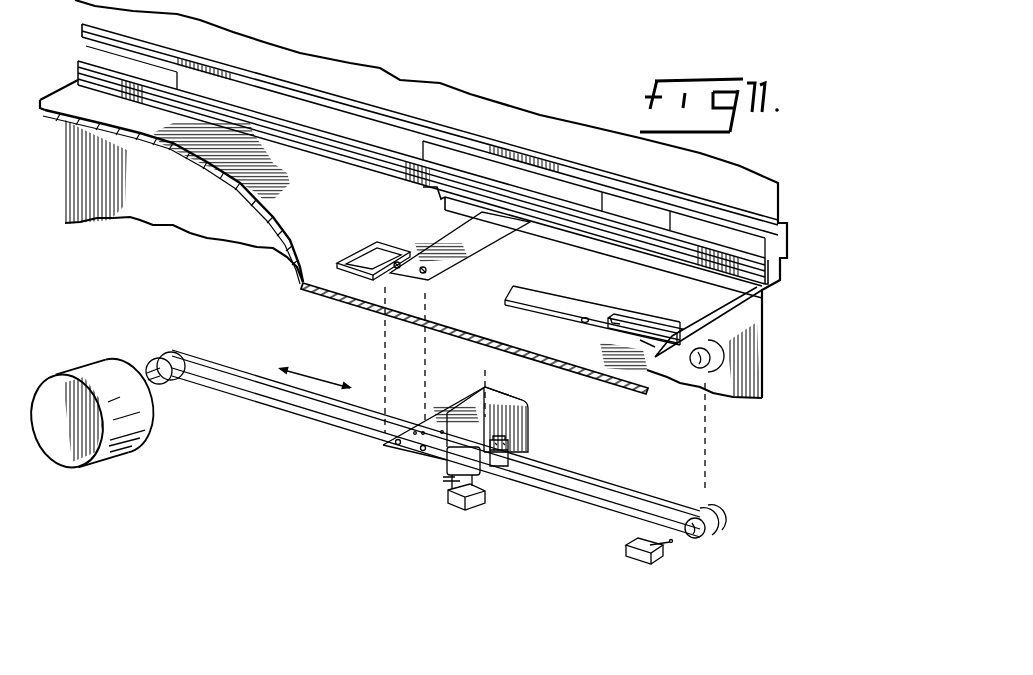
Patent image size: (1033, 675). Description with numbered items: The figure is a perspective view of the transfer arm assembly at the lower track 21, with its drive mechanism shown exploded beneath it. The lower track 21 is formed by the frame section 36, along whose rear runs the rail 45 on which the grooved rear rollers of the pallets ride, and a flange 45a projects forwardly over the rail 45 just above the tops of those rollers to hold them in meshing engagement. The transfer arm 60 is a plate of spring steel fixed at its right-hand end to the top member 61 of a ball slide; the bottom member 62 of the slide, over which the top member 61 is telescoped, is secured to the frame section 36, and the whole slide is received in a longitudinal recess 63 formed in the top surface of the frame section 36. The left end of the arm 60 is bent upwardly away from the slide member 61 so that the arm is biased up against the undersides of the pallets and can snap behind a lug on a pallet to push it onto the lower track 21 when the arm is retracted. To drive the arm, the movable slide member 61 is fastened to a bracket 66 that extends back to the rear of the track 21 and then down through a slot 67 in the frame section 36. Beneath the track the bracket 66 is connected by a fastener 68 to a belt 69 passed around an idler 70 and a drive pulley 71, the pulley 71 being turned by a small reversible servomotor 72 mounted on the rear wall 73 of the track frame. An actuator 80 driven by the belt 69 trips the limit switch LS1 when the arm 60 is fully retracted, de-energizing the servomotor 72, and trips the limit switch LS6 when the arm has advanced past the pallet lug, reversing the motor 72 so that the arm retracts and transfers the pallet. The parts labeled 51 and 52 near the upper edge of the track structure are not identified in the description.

The flange 45a is at (82, 30).
The rail 45 is at (83, 72).
The frame section 36 is at (62, 97).
The rear wall 73 is at (161, 210).
The back board element 52 is at (379, 8).
The back board element 51 is at (430, 0).
The lower track 21 is at (332, 303).
The slot 67 is at (548, 226).
The transfer arm 60 is at (526, 294).
The top member of ball slide 61 is at (647, 333).
The bottom member of ball slide 62 is at (650, 347).
The longitudinal recess 63 is at (662, 352).
The bracket 66 is at (457, 237).
The fastener 68 is at (508, 447).
The actuator 80 is at (486, 501).
The limit switch LS1 is at (466, 508).
The drive pulley 71 is at (155, 358).
The servomotor 72 is at (120, 437).
The belt 69 is at (312, 421).
The idler 70 is at (695, 543).
The limit switch LS6 is at (640, 563).